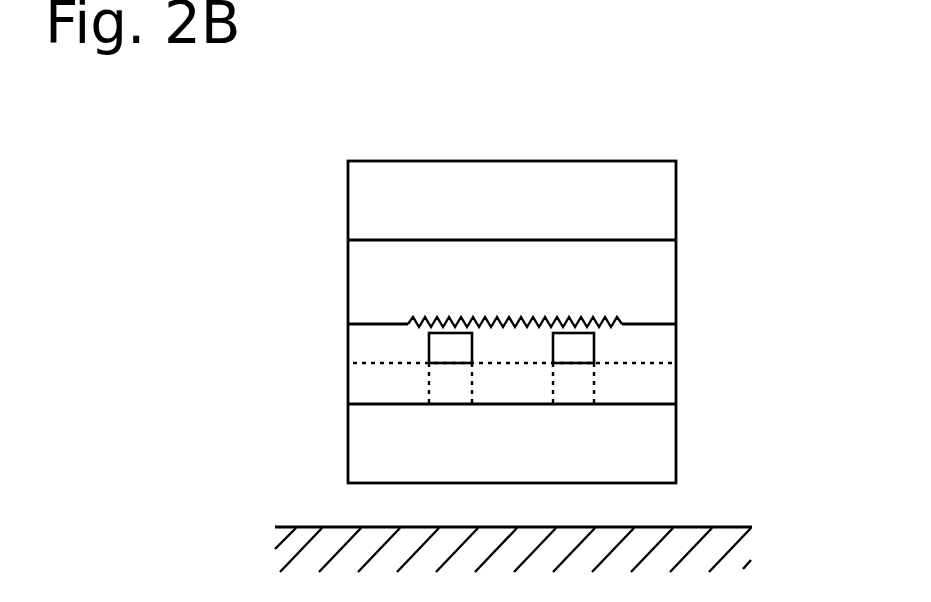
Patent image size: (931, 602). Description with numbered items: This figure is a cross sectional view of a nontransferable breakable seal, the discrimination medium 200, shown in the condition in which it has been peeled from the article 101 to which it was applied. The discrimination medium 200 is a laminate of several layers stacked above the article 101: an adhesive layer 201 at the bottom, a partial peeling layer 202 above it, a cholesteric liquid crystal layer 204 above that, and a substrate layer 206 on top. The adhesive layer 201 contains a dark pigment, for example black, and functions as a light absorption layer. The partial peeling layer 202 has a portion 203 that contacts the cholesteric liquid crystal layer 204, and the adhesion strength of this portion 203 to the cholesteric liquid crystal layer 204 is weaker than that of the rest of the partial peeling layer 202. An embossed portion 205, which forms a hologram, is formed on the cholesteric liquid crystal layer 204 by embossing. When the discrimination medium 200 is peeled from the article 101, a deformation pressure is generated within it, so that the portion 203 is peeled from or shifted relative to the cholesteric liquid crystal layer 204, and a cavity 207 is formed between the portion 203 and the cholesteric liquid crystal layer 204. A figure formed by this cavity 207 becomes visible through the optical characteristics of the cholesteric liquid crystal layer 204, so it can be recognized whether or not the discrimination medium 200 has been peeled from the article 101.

The discrimination medium 200 is at (773, 160).
The adhesive layer 201 is at (660, 454).
The partial peeling layer 202 is at (687, 323).
The portion 203 is at (457, 346).
The cholesteric liquid crystal layer 204 is at (660, 286).
The embossed portion 205 is at (497, 311).
The substrate layer 206 is at (660, 203).
The cavity 207 is at (581, 336).
The article 101 is at (300, 526).